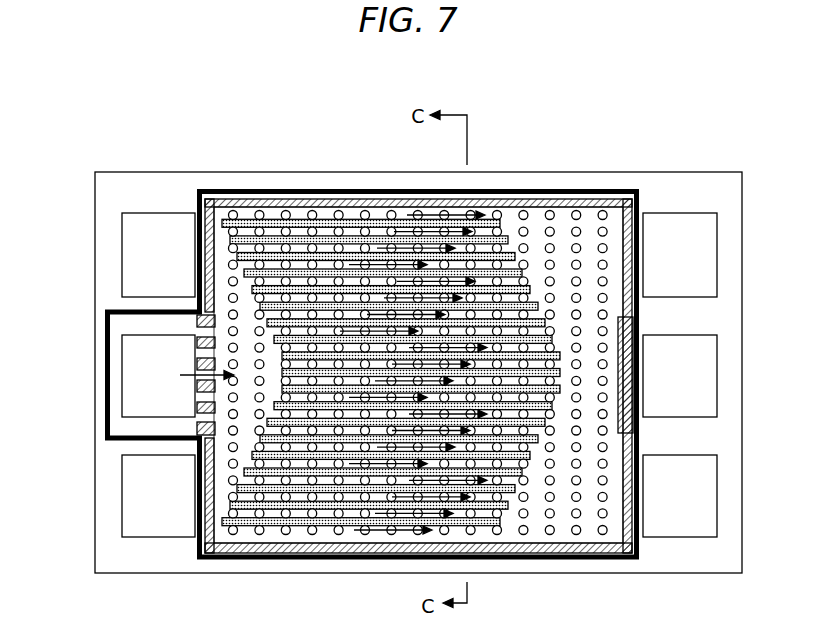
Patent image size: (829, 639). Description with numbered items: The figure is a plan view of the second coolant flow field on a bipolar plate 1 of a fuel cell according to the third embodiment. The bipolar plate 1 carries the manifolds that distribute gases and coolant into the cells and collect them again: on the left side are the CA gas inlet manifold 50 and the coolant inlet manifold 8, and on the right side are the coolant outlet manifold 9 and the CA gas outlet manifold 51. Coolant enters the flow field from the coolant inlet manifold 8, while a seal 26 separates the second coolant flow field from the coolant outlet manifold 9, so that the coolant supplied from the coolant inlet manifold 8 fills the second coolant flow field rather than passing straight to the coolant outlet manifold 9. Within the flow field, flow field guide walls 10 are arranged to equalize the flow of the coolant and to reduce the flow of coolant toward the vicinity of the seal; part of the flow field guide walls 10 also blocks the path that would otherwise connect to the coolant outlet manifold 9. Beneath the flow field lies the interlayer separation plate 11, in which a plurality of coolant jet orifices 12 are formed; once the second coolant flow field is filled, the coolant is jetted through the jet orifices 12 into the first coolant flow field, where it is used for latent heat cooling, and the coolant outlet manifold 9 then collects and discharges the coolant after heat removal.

The bipolar plate 1 is at (276, 181).
The flow field guide walls 10 is at (356, 218).
The seal 26 is at (500, 190).
The coolant jet orifices 12 is at (553, 213).
The interlayer separation plate 11 is at (592, 213).
The CA gas inlet manifold 50 is at (135, 254).
The coolant inlet manifold 8 is at (135, 373).
The coolant outlet manifold 9 is at (708, 373).
The CA gas outlet manifold 51 is at (708, 495).